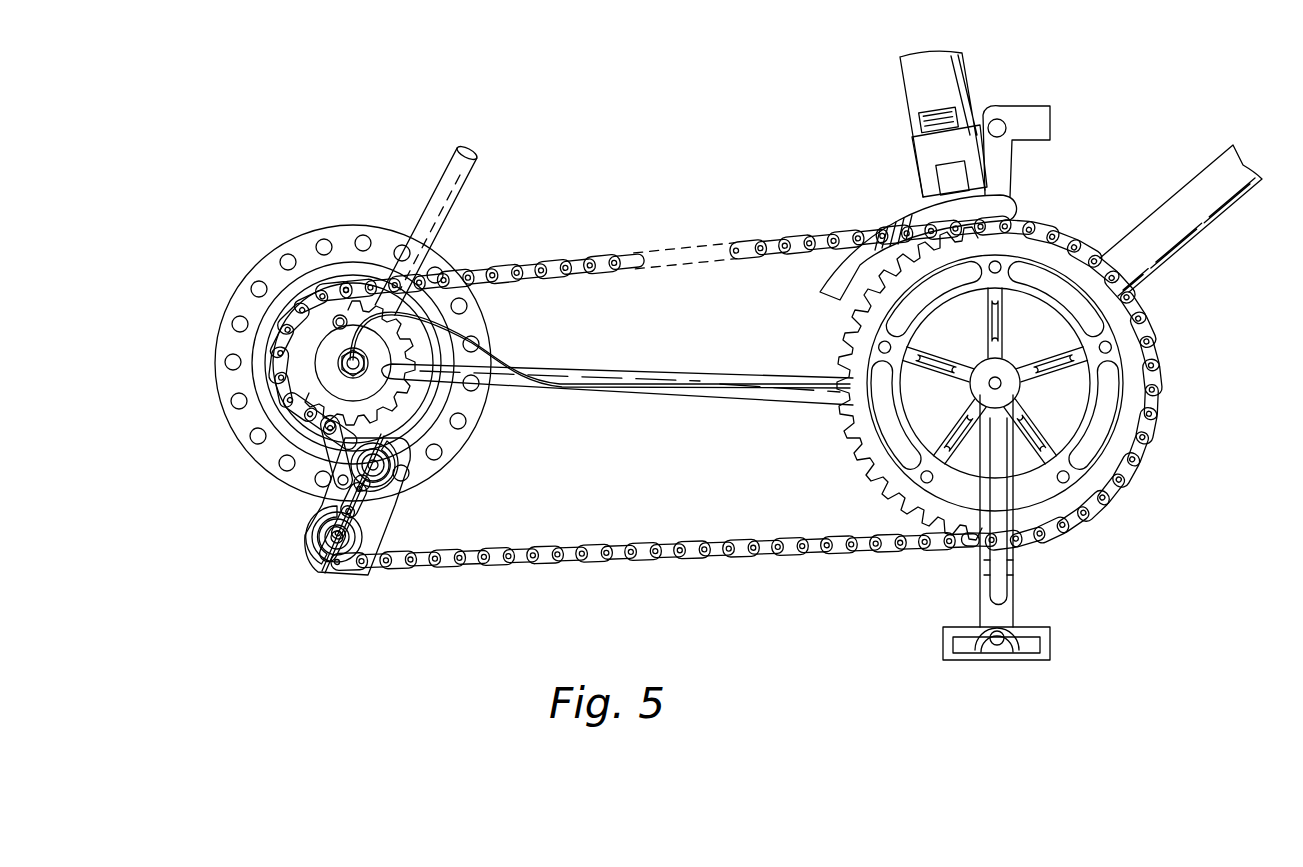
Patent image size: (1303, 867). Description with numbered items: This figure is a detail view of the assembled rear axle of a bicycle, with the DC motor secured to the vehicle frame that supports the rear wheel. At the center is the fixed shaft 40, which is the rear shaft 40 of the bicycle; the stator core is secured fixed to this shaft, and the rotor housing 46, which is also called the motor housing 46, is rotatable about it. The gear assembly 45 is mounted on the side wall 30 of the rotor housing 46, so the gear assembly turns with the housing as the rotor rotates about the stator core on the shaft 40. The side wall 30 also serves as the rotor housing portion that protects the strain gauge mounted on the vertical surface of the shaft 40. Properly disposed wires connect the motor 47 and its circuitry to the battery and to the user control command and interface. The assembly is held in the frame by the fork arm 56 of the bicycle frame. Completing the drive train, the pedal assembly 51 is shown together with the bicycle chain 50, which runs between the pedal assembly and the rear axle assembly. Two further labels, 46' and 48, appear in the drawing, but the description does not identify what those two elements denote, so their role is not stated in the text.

The side wall 30 is at (280, 408).
The shaft 40 is at (340, 355).
The gear assembly 45 is at (412, 445).
The rotor housing 46 is at (353, 329).
The chainstay 46' is at (617, 368).
The motor 47 is at (297, 439).
The control cable 48 is at (440, 338).
The bicycle chain 50 is at (732, 254).
The pedal assembly 51 is at (999, 667).
The fork arm 56 is at (447, 195).